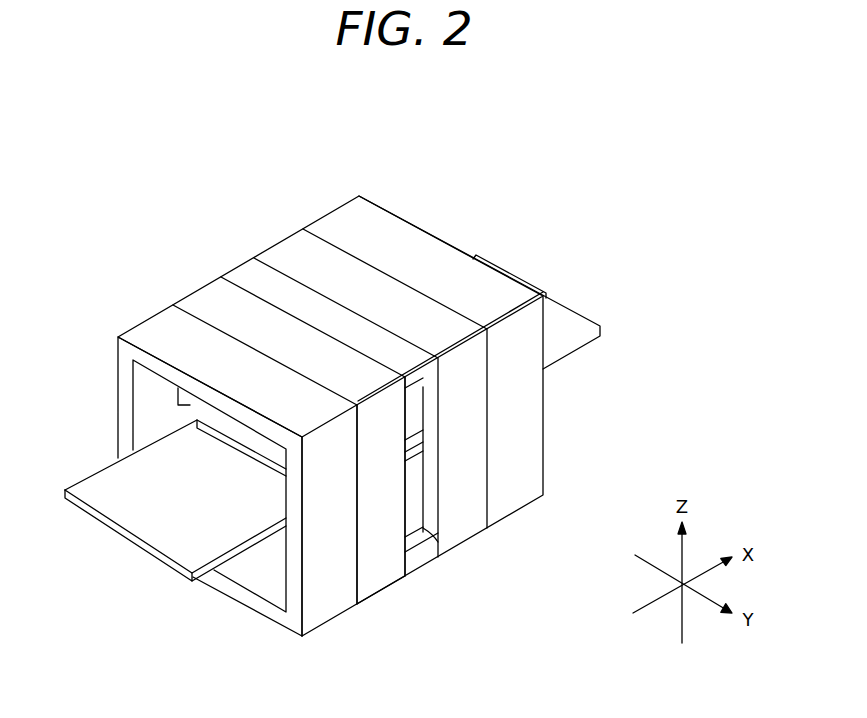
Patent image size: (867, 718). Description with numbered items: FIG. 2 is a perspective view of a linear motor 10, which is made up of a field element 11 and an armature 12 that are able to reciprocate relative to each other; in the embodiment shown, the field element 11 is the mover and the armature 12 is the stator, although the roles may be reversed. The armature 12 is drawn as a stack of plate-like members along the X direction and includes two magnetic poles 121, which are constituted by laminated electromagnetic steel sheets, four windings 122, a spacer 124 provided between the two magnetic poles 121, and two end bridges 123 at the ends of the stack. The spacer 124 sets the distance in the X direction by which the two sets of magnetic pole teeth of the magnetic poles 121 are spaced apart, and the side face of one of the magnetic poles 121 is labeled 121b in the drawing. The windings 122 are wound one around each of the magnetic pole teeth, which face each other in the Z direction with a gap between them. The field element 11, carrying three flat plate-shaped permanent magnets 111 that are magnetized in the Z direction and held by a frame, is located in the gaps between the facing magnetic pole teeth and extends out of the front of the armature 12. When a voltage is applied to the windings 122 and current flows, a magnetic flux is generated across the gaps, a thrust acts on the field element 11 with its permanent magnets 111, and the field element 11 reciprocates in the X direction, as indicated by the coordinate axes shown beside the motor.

The linear motor 10 is at (455, 176).
The field element 11 is at (122, 537).
The permanent magnet 111 is at (197, 450).
The armature 12 is at (32, 302).
The magnetic pole 121 is at (215, 300).
The side face of plate 121b is at (377, 582).
The winding 122 is at (190, 405).
The end bridge 123 is at (165, 327).
The spacer 124 is at (257, 277).